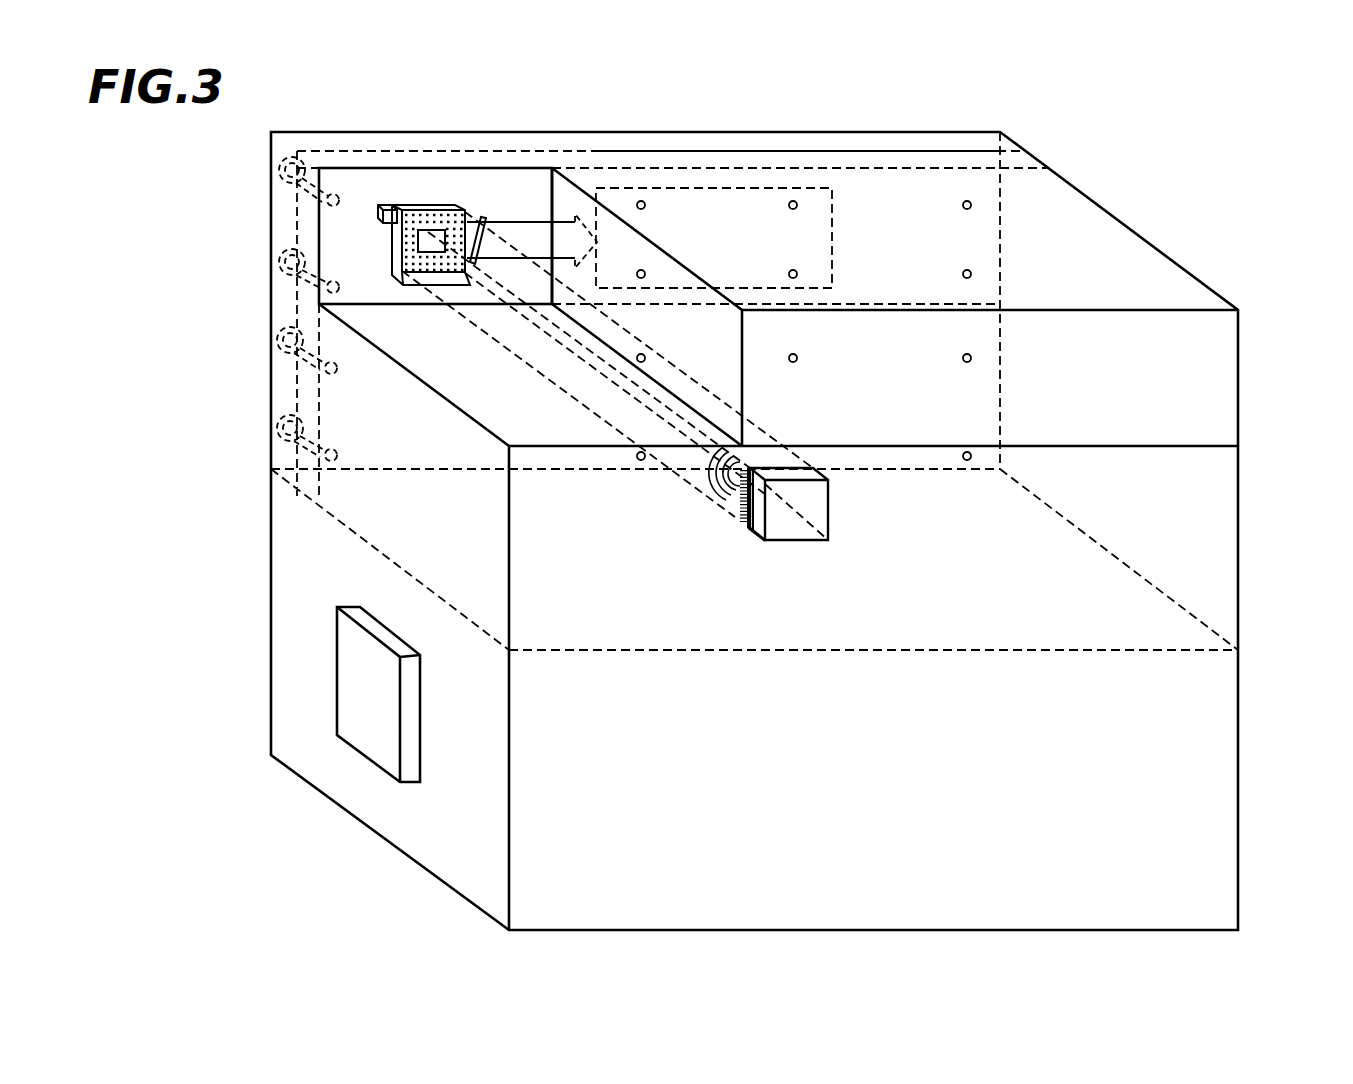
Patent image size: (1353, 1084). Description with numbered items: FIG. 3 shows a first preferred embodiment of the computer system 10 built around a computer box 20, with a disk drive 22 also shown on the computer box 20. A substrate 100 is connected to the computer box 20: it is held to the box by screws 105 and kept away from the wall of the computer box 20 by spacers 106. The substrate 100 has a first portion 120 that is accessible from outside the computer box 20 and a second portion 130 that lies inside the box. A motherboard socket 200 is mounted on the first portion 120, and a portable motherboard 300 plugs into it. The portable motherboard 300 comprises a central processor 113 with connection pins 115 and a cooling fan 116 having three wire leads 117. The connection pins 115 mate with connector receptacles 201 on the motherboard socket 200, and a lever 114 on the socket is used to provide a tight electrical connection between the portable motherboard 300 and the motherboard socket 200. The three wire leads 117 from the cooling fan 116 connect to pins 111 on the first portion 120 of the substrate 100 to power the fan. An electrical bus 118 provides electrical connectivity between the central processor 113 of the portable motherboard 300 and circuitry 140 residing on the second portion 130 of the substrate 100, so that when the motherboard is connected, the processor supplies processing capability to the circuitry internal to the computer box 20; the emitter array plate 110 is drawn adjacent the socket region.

The measuring system 10 is at (1142, 172).
The computer box 20 is at (1240, 583).
The disk drive 22 is at (363, 667).
The substrate 100 is at (527, 180).
The screws 105 is at (305, 445).
The spacers 106 is at (292, 458).
The emitter array plate 110 is at (397, 249).
The pins 111 is at (392, 217).
The central processor 113 is at (752, 531).
The lever 114 is at (483, 214).
The connection pins 115 is at (745, 522).
The cooling fan 116 is at (765, 541).
The wire leads 117 is at (733, 493).
The electrical bus 118 is at (607, 364).
The first portion of substrate 120 is at (388, 180).
The second portion of substrate 130 is at (717, 177).
The circuitry 140 is at (778, 197).
The motherboard socket 200 is at (348, 189).
The connector receptacles 201 is at (440, 208).
The portable motherboard 300 is at (791, 539).